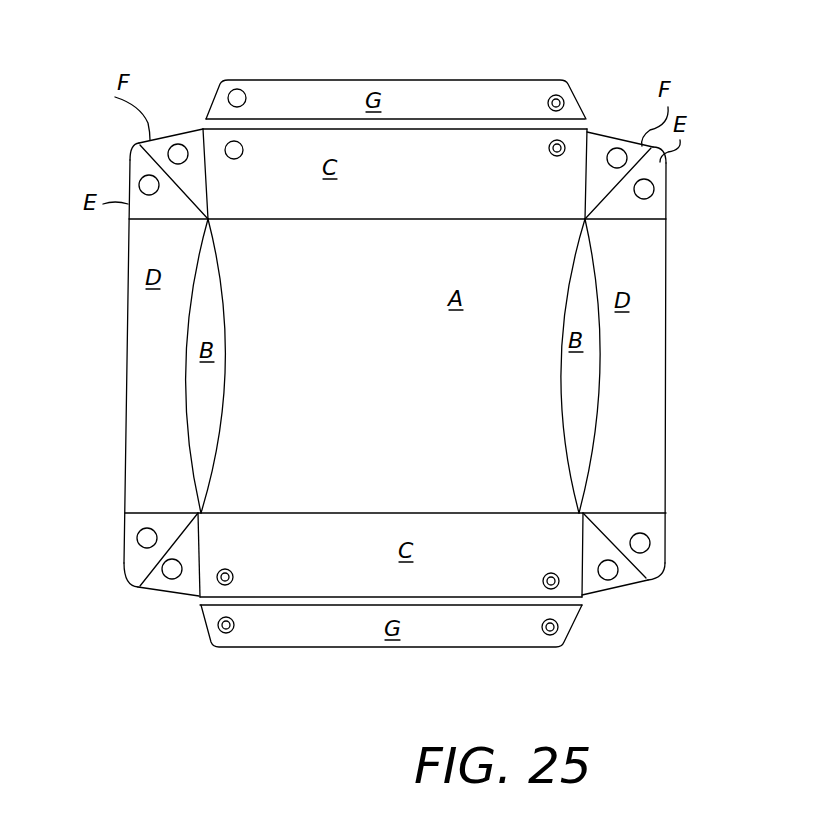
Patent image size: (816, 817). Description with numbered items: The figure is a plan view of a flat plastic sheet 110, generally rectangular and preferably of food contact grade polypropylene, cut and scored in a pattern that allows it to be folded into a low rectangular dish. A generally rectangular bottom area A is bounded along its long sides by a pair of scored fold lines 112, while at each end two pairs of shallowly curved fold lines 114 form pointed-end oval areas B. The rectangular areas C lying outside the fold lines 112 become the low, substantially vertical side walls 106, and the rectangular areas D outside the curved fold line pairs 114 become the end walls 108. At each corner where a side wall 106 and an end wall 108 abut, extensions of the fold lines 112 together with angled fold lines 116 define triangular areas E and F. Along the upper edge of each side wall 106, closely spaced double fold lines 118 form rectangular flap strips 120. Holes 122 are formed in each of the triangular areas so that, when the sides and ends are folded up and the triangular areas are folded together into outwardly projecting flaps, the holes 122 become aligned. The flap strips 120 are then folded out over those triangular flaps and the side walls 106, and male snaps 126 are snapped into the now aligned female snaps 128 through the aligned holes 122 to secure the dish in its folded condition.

The side wall 106 is at (398, 138).
The end wall 108 is at (133, 392).
The flat plastic sheet 110 is at (713, 305).
The scored fold line 112 is at (430, 192).
The shallowly curved fold line 114 is at (225, 303).
The angled fold line 116 is at (132, 157).
The double fold line 118 is at (301, 128).
The flap strip 120 is at (476, 85).
The hole 122 is at (175, 143).
The male snap 126 is at (240, 88).
The female snap 128 is at (237, 160).